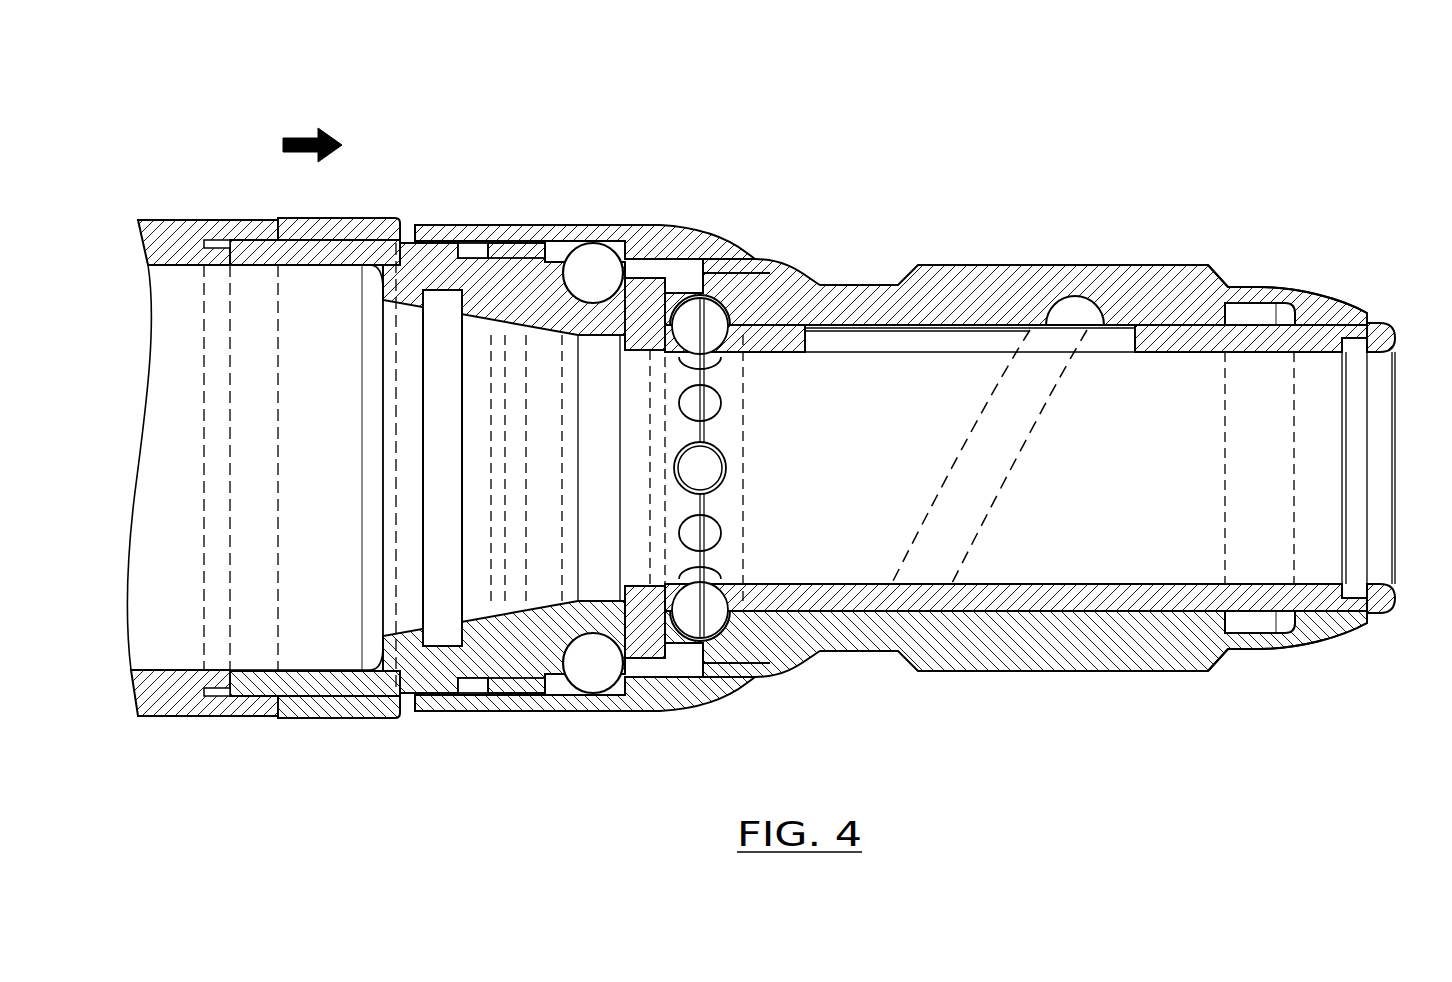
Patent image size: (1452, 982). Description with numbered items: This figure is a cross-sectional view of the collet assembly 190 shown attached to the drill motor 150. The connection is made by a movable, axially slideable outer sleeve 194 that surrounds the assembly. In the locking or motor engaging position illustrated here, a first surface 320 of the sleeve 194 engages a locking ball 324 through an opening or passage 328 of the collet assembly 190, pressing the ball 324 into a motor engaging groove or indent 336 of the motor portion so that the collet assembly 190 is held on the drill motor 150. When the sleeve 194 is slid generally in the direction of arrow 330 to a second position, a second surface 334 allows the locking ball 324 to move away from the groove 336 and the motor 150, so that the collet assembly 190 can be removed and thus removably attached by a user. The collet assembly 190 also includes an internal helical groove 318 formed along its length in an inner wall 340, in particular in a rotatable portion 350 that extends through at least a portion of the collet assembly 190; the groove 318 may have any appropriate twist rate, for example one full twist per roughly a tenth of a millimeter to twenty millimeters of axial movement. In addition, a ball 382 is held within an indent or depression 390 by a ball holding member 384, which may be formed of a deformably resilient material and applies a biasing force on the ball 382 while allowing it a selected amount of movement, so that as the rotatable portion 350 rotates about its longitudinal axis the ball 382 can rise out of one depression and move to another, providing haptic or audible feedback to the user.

The drill motor 150 is at (147, 178).
The arrow 330 is at (304, 119).
The collet assembly 190 is at (875, 422).
The outer sleeve 194 is at (440, 231).
The second surface 334 is at (470, 249).
The opening or passage 328 is at (606, 243).
The locking ball 324 is at (621, 262).
The first surface 320 is at (645, 262).
The ball holding member 384 is at (701, 257).
The motor engaging groove 336 is at (597, 318).
The helical groove 318 is at (1093, 312).
The inner wall 340 is at (1190, 268).
The rotatable portion 350 is at (1397, 338).
The ball 382 is at (722, 463).
The indent or depression 390 is at (714, 466).